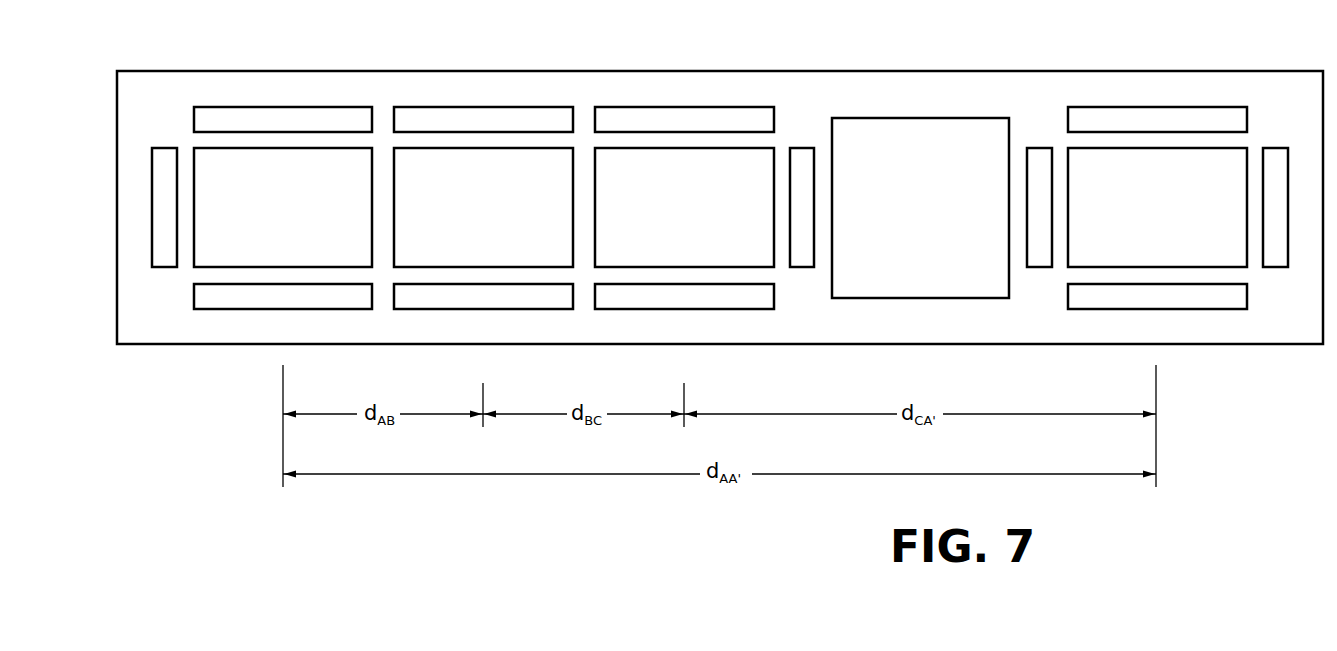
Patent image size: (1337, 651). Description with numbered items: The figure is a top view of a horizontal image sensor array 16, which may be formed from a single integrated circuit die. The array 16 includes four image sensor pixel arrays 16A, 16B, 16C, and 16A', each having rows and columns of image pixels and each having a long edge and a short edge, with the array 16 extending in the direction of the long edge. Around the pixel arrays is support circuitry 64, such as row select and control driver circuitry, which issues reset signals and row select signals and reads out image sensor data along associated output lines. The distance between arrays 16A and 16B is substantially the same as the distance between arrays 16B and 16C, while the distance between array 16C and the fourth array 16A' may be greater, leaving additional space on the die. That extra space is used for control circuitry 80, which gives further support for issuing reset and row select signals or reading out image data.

The image sensor array 16 is at (178, 68).
The support circuitry 64 is at (243, 114).
The image sensor pixel array 16A is at (283, 207).
The image sensor pixel array 16B is at (463, 248).
The image sensor pixel array 16C is at (664, 248).
The image sensor pixel array 16A' is at (1157, 207).
The control circuitry 80 is at (906, 248).